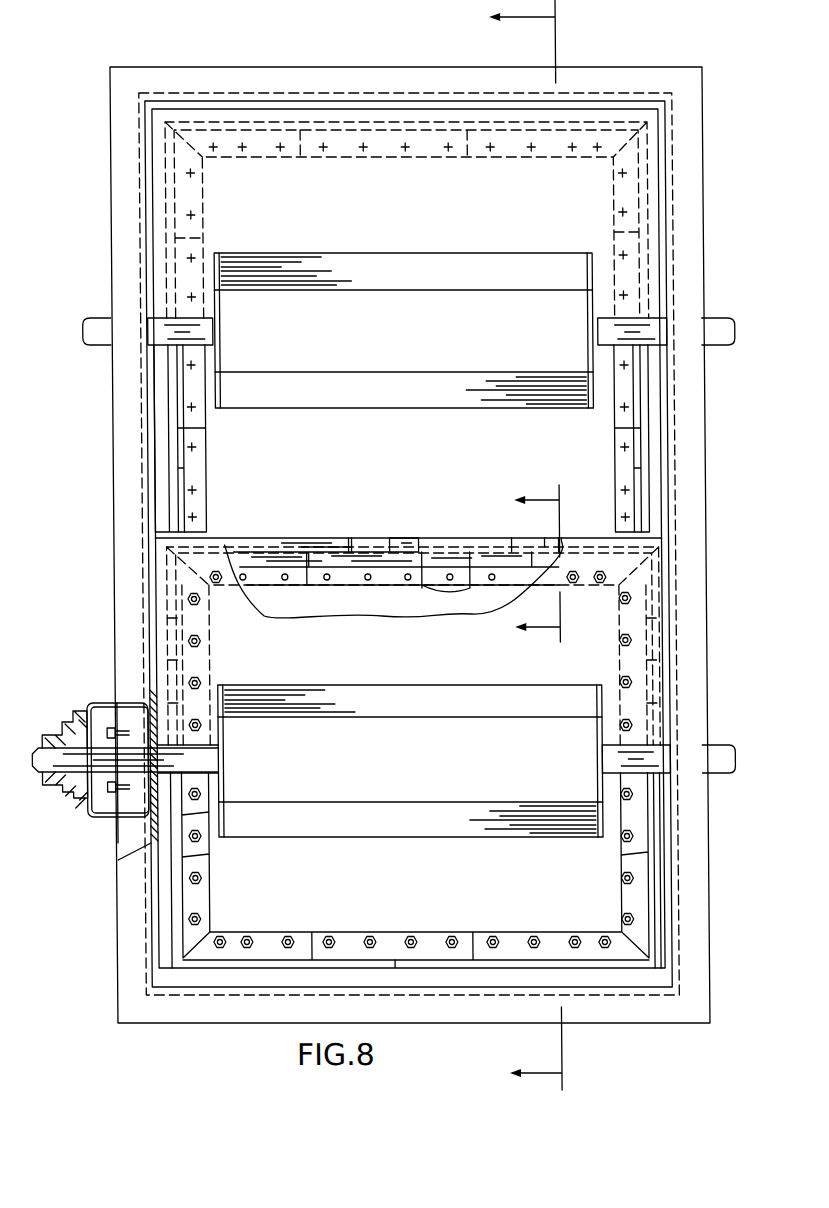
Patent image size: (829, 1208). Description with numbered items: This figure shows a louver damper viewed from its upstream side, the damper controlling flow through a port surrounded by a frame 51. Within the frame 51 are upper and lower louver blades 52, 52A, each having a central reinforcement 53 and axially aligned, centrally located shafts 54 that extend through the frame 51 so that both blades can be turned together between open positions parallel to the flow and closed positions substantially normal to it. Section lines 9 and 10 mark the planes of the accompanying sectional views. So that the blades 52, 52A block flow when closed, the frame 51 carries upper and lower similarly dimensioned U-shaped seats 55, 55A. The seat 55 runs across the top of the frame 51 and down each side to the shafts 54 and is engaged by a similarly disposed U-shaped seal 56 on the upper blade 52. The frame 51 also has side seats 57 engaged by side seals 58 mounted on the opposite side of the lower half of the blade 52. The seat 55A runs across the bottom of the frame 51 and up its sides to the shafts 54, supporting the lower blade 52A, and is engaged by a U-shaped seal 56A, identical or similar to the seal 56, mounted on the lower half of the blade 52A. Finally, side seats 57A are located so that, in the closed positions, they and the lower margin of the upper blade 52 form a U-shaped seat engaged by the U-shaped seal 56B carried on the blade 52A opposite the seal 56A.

The section line 9- 9 is at (544, 545).
The section line 10- 10 is at (558, 563).
The frame 51 is at (679, 77).
The upper louver blade 52 is at (330, 237).
The lower louver blade 52A is at (605, 672).
The central reinforcement 53 is at (405, 270).
The shafts 54 is at (722, 325).
The upper U-shaped seat 55 is at (666, 181).
The lower U-shaped seat 55A is at (663, 918).
The U-shaped seal 56 is at (645, 277).
The lower U-shaped seal 56A is at (648, 845).
The U-shaped seal on lower blade 56B is at (270, 545).
The side seats 57 is at (655, 428).
The side seats for lower blade 57A is at (667, 565).
The side seals 58 is at (643, 502).